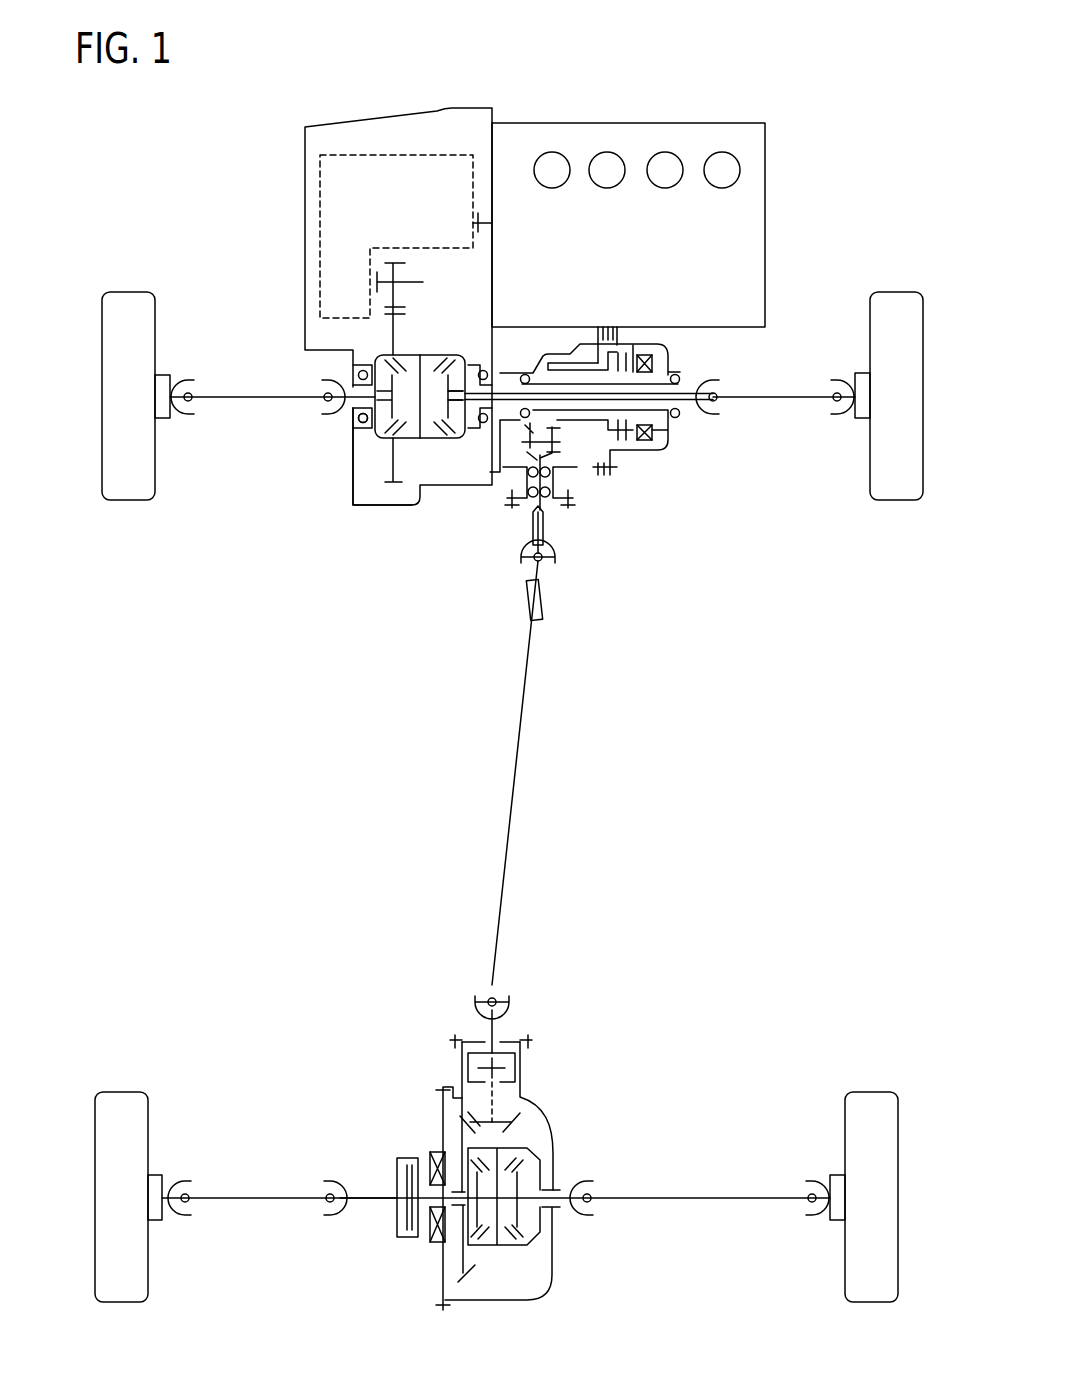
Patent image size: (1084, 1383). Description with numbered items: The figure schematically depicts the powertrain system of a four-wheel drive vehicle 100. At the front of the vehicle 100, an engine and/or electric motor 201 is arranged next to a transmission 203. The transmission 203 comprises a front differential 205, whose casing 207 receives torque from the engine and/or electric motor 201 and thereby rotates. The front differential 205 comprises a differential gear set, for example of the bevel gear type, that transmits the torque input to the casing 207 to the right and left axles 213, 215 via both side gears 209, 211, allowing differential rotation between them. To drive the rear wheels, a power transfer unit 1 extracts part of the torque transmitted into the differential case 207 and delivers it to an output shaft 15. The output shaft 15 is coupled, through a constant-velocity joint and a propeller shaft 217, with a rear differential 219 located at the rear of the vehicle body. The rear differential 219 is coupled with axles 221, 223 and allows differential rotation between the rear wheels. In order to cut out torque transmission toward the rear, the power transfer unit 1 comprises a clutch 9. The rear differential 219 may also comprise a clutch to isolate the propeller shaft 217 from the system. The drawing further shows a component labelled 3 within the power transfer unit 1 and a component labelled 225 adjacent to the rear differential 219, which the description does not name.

The vehicle 100 is at (787, 62).
The engine and/or electric motor 201 is at (690, 140).
The transmission 203 is at (378, 170).
The left axle 215 is at (343, 385).
The right axle 213 is at (570, 395).
The clutch 9 is at (646, 329).
The second clutch 3 is at (676, 432).
The power transfer unit 1 is at (642, 472).
The output shaft 15 is at (546, 525).
The side gear 211 is at (380, 432).
The casing 207 is at (423, 440).
The side gear 209 is at (458, 432).
The front differential 205 is at (433, 447).
The propeller shaft 217 is at (520, 760).
The rear axle 223 is at (370, 1196).
The rear axle 221 is at (565, 1202).
The rear clutch 225 is at (393, 1242).
The rear differential 219 is at (515, 1252).